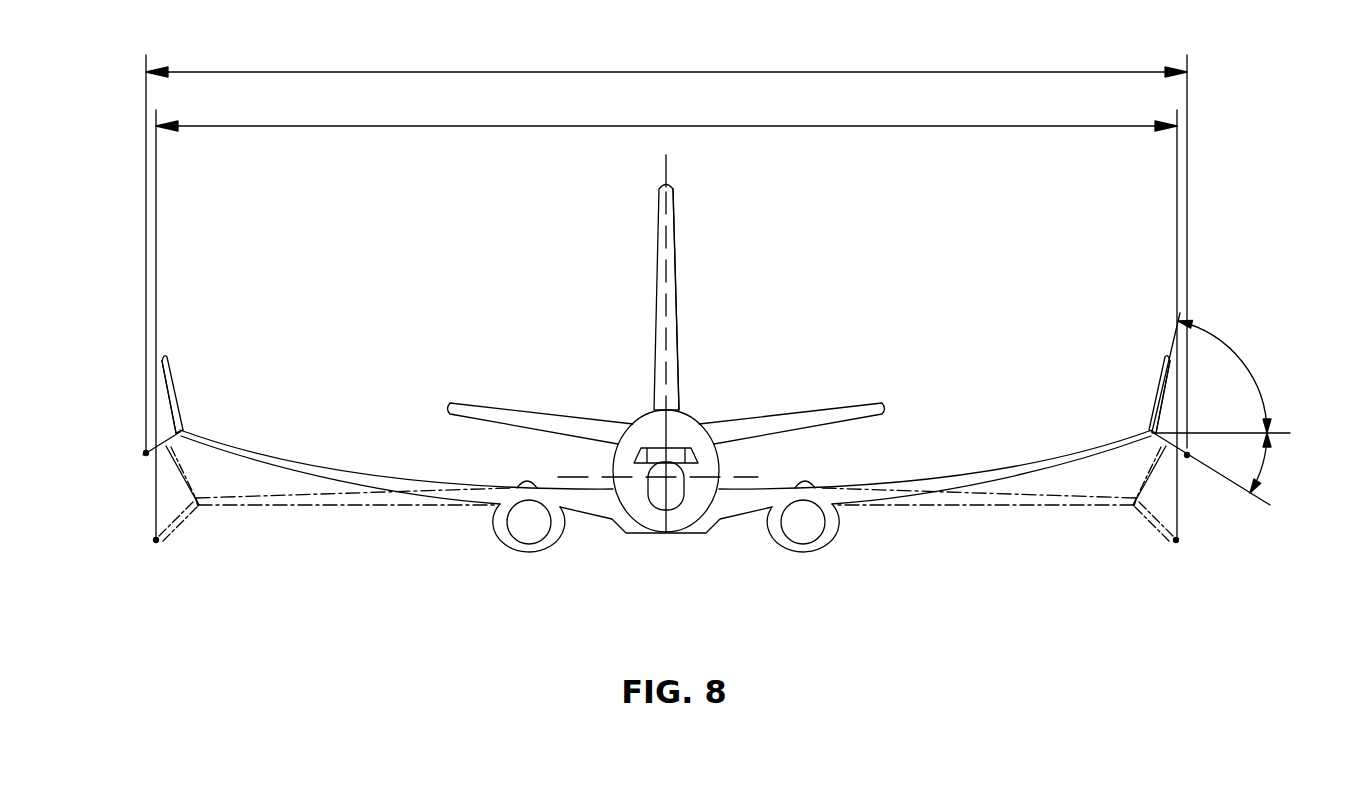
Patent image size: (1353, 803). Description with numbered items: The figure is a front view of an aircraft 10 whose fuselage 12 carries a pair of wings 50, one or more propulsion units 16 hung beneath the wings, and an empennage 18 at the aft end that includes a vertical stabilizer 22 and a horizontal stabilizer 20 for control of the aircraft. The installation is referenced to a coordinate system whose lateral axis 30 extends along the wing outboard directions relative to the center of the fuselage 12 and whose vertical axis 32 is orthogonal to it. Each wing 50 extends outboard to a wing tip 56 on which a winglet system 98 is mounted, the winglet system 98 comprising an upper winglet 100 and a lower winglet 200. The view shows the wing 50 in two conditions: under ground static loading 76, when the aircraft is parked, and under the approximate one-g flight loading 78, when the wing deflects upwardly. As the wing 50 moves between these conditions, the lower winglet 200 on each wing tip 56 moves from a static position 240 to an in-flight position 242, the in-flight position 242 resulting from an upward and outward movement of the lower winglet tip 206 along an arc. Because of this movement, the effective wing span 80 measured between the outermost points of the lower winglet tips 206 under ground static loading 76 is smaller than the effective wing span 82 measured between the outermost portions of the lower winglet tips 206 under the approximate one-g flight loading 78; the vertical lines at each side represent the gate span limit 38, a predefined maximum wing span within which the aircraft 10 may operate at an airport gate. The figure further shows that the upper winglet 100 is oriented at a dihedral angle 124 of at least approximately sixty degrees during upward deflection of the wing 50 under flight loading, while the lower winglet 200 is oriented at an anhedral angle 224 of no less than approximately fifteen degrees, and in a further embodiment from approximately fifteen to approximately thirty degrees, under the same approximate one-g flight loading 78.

The aircraft 10 is at (688, 408).
The fuselage 12 is at (643, 410).
The propulsion unit 16 is at (530, 553).
The empennage 18 is at (675, 224).
The horizontal stabilizer 20 is at (483, 403).
The vertical stabilizer 22 is at (676, 280).
The lateral axis 30 is at (628, 475).
The vertical axis 32 is at (664, 334).
The gate span limit 38 is at (156, 210).
The wing 50 is at (315, 468).
The wing tip 56 is at (183, 428).
The ground static loading 76 is at (333, 506).
The approximate 1-g flight loading 78 is at (372, 476).
The effective wing span 80 is at (848, 126).
The effective wing span 82 is at (848, 71).
The winglet system 98 is at (170, 402).
The upper winglet 100 is at (172, 382).
The dihedral angle 124 is at (1245, 360).
The lower winglet 200 is at (167, 440).
The lower winglet tip 206 is at (154, 458).
The anhedral angle 224 is at (1267, 463).
The static position 240 is at (155, 543).
The in-flight position 242 is at (145, 453).